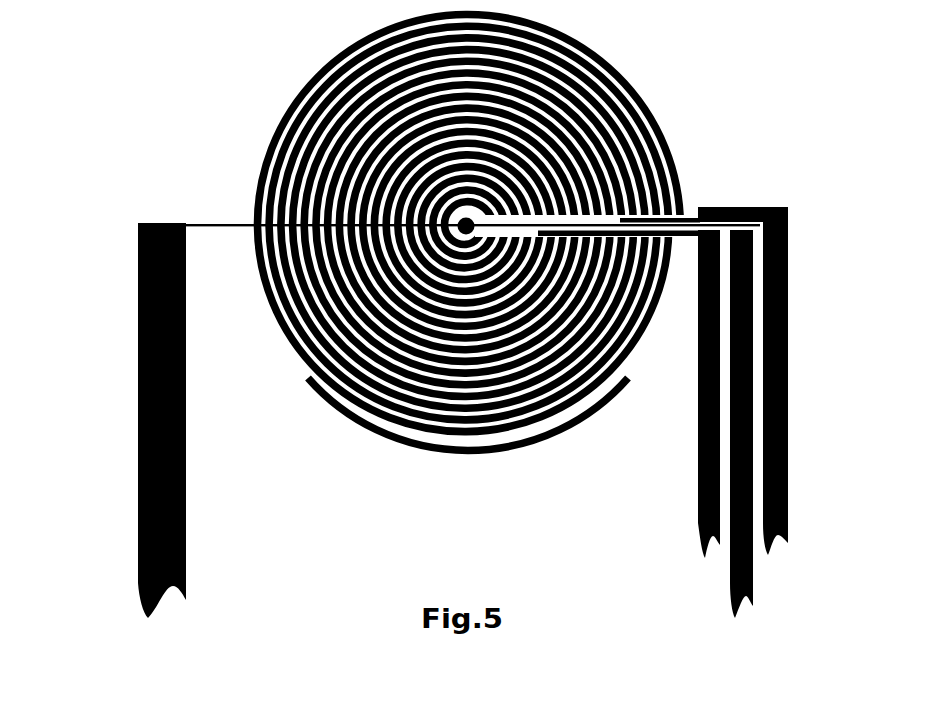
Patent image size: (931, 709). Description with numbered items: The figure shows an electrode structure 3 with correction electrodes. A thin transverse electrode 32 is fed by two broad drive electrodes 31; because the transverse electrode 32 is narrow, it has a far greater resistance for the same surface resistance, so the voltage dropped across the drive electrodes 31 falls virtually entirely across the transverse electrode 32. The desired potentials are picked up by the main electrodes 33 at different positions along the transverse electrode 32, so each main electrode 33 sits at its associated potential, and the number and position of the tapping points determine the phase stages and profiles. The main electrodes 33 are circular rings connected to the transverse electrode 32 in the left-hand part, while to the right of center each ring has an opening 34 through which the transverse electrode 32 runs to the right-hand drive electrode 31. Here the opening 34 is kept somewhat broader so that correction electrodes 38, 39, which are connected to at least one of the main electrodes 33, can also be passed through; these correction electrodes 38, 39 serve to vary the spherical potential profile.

The electrode structure 3 is at (628, 70).
The drive electrodes 31 is at (124, 400).
The transverse electrode 32 is at (199, 216).
The main electrodes 33 is at (563, 423).
The opening 34 is at (668, 211).
The correction electrode 38 is at (690, 240).
The correction electrode 39 is at (785, 401).